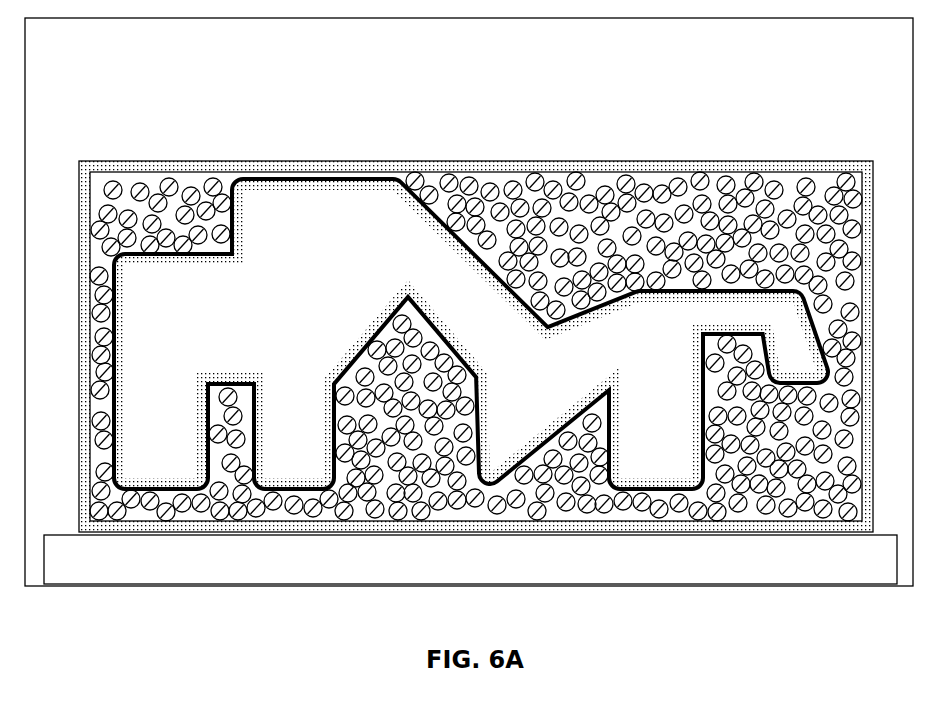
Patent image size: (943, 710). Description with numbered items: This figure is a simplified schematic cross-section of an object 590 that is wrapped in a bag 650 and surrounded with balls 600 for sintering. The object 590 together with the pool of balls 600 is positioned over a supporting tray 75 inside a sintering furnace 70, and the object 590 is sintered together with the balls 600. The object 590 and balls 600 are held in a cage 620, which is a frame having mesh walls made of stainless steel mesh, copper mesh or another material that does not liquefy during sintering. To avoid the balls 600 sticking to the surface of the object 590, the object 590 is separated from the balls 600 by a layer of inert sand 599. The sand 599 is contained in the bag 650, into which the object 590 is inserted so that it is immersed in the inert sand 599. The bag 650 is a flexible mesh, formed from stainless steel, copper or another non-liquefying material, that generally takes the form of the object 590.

The sintering furnace 70 is at (383, 18).
The supporting tray 75 is at (833, 560).
The object 590 is at (278, 178).
The inert sand 599 is at (512, 476).
The balls 600 is at (746, 176).
The cage 620 is at (858, 178).
The bag 650 is at (121, 177).